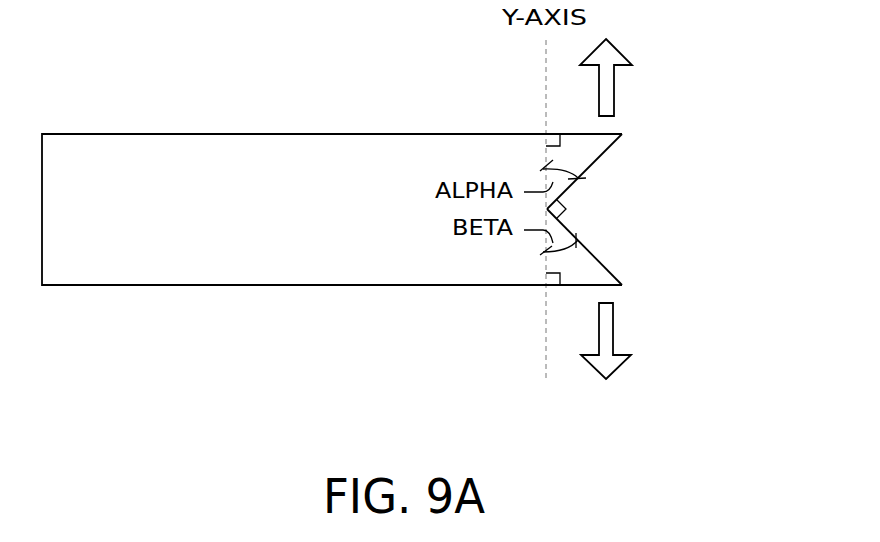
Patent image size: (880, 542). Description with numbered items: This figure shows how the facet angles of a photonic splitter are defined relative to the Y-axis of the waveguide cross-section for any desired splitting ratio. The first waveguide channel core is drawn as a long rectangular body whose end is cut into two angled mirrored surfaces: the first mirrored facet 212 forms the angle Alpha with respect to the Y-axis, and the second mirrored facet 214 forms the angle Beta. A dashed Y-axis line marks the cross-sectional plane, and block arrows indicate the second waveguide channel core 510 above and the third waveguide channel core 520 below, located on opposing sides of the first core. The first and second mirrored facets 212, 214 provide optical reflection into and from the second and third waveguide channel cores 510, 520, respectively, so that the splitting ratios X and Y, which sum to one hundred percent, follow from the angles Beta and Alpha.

The first mirrored facet 212 is at (605, 157).
The second mirrored facet 214 is at (605, 262).
The second waveguide channel core 510 is at (665, 77).
The third waveguide channel core 520 is at (666, 341).